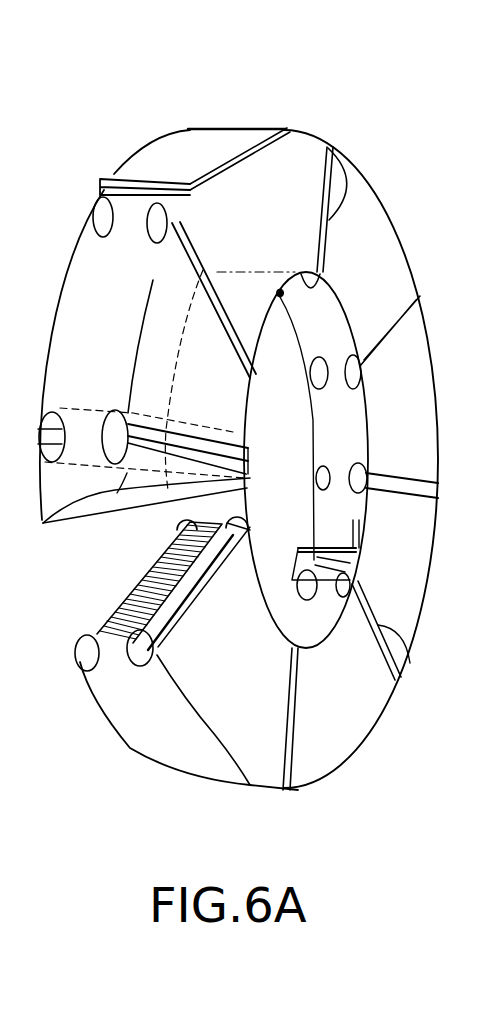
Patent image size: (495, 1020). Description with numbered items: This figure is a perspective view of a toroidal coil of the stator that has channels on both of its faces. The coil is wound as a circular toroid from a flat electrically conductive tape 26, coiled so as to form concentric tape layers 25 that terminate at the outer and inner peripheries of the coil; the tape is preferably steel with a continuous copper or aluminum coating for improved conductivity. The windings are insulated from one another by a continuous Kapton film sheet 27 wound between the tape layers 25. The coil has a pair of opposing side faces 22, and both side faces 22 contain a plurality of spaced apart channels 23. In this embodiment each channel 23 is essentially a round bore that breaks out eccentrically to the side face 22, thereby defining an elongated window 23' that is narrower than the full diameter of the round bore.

The side face 22 is at (372, 257).
The channel 23 is at (230, 356).
The elongated window 23' is at (322, 425).
The tape layer 25 is at (150, 560).
The flat electrically conductive tape 26 is at (120, 178).
The Kapton film sheet 27 is at (303, 590).